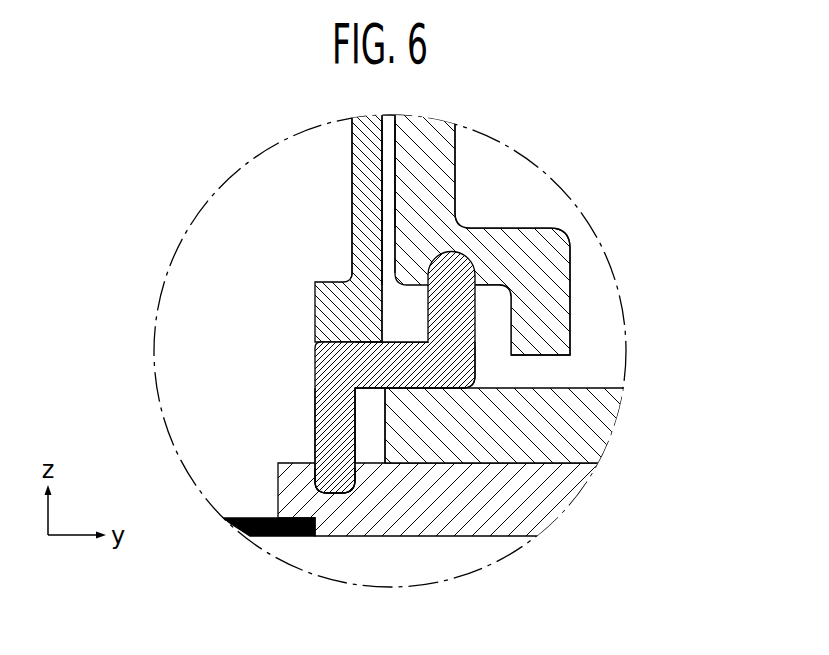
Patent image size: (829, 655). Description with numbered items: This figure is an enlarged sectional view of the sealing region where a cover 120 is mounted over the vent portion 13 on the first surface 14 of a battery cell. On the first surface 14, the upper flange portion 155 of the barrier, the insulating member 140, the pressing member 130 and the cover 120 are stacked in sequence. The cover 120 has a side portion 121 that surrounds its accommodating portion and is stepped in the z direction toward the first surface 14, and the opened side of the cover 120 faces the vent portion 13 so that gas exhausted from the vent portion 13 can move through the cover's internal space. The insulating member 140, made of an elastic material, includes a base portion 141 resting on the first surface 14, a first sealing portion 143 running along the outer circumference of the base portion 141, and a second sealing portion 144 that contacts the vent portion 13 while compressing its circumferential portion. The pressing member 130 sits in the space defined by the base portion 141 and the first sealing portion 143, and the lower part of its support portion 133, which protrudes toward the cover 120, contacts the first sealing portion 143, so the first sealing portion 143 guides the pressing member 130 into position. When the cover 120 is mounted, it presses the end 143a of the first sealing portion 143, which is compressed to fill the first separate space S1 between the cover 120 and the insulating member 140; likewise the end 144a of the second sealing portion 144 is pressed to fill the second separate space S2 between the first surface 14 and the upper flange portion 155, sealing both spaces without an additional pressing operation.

The vent portion 13 is at (253, 538).
The first surface 14 is at (553, 510).
The cover 120 is at (543, 228).
The side portion 121 is at (440, 163).
The pressing member 130 is at (305, 226).
The support portion 133 is at (362, 185).
The insulating member 140 is at (351, 440).
The base portion 141 is at (410, 363).
The first sealing portion 143 is at (480, 308).
The end of the first sealing portion 143a is at (452, 253).
The second sealing portion 144 is at (322, 418).
The end of the second sealing portion 144a is at (322, 478).
The upper flange portion 155 is at (588, 438).
The first separate space S1 is at (416, 315).
The second separate space S2 is at (380, 435).